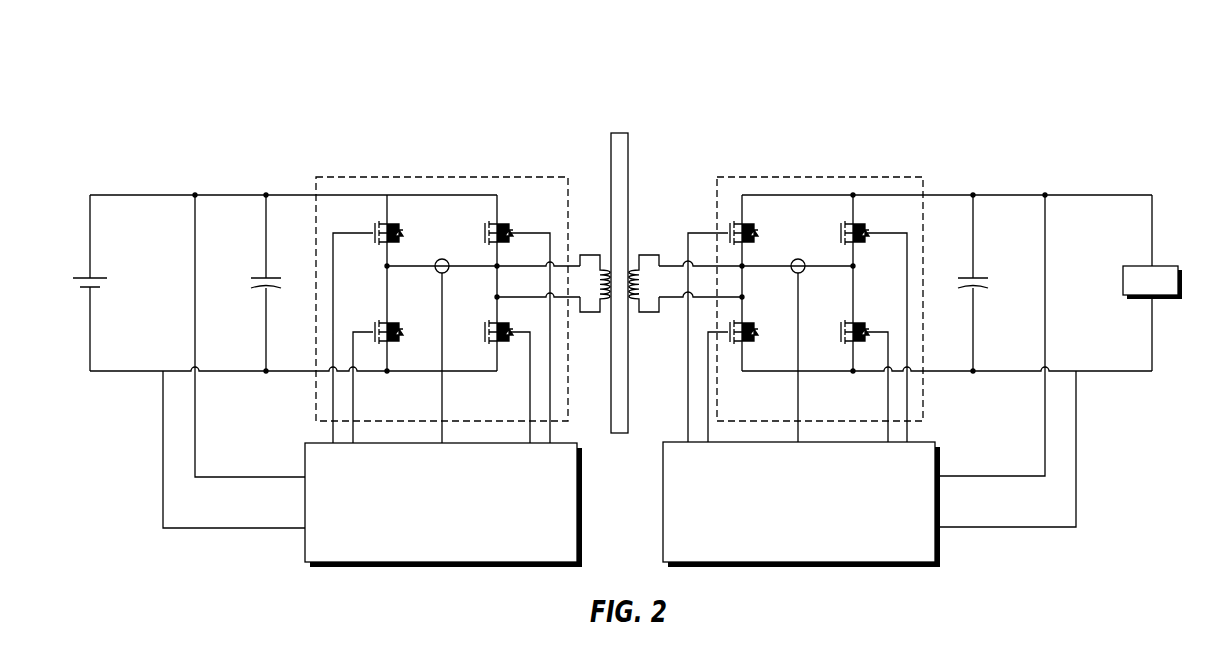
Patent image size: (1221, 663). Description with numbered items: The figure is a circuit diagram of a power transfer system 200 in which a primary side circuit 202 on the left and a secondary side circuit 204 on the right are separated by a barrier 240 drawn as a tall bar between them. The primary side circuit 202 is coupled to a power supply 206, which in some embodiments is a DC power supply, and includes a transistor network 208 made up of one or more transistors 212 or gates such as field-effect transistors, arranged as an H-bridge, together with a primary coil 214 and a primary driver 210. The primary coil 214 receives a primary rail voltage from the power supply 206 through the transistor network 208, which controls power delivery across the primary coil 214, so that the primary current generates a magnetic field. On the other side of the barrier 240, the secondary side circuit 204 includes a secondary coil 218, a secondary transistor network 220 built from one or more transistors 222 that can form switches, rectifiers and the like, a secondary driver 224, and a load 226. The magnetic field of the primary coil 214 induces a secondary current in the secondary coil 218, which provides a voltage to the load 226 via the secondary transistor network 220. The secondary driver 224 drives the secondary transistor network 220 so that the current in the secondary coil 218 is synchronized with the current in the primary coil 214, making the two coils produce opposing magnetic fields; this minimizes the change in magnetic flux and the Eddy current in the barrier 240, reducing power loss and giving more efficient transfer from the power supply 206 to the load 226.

The power transfer system 200 is at (1094, 73).
The primary side circuit 202 is at (243, 142).
The secondary side circuit 204 is at (996, 140).
The power supply 206 is at (85, 278).
The transistor network 208 is at (372, 177).
The primary driver 210 is at (305, 460).
The transistors 212 is at (495, 320).
The primary coil 214 is at (600, 312).
The secondary coil 218 is at (642, 312).
The secondary transistor network 220 is at (862, 177).
The transistors 222 is at (851, 320).
The secondary driver 224 is at (663, 503).
The load 226 is at (1123, 281).
The barrier 240 is at (619, 133).